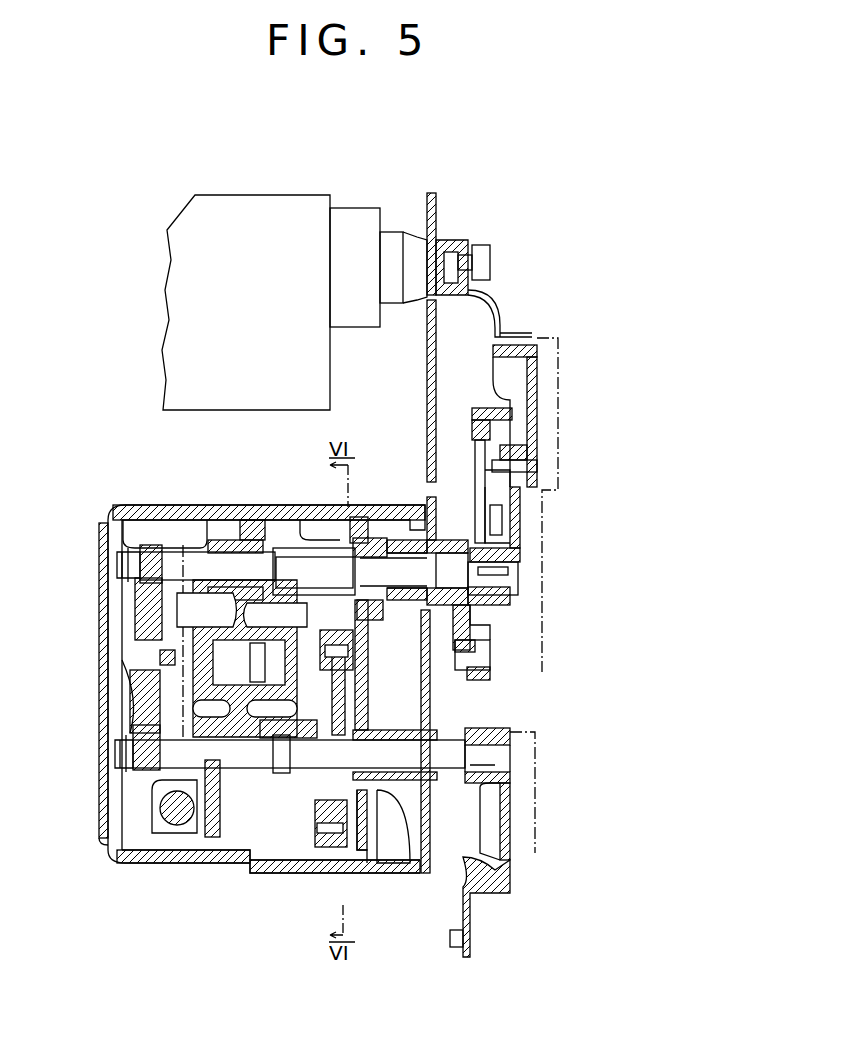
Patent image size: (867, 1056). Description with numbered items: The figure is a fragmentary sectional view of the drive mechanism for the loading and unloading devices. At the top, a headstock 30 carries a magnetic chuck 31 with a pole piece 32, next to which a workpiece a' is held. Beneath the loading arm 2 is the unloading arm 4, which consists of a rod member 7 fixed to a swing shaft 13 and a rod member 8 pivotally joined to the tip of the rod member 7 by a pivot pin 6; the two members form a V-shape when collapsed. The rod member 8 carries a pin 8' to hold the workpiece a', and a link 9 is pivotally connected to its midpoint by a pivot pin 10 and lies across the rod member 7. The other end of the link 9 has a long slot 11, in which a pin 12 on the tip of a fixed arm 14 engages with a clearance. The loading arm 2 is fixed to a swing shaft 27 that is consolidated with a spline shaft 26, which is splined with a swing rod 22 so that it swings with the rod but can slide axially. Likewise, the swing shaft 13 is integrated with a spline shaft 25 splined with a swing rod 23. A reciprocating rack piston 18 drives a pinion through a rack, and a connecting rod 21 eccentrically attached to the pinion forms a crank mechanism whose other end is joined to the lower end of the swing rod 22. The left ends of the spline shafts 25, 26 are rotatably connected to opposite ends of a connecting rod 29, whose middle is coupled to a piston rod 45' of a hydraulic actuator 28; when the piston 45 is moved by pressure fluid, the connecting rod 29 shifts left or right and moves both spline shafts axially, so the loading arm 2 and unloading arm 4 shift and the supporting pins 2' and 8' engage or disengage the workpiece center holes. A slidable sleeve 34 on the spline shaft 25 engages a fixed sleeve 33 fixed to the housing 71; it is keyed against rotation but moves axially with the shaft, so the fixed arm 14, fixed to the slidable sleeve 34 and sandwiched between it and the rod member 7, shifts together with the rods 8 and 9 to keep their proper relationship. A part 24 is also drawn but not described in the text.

The headstock 30 is at (243, 205).
The magnetic chuck 31 is at (355, 207).
The pole piece 32 is at (425, 243).
The workpiece a' is at (462, 239).
The pin 8' is at (504, 262).
The rod member 8 is at (534, 388).
The pivot pin 10 is at (476, 418).
The link 9 is at (478, 482).
The pivot pin 6 is at (530, 464).
The rod member 7 is at (521, 528).
The unloading arm 4 is at (524, 550).
The swing shaft 13 is at (497, 580).
The fixed arm 14 is at (471, 622).
The pin 12 is at (472, 660).
The long slot 11 is at (482, 676).
The slidable sleeve 34 is at (441, 545).
The fixed sleeve 33 is at (373, 527).
The spline shaft 25 is at (200, 560).
The housing 71 is at (283, 505).
The hydraulic actuator 28 is at (208, 628).
The swing rod 23 is at (332, 603).
The collar 24 is at (366, 630).
The swing rod 22 is at (345, 695).
The piston rod 45' is at (105, 660).
The piston 45 is at (225, 679).
The connecting rod 29 is at (143, 703).
The spline shaft 26 is at (255, 770).
The rack piston 18 is at (176, 826).
The connecting rod 21 is at (332, 846).
The swing shaft 27 is at (494, 755).
The loading arm 2 is at (520, 870).
The supporting pin 2' is at (433, 951).